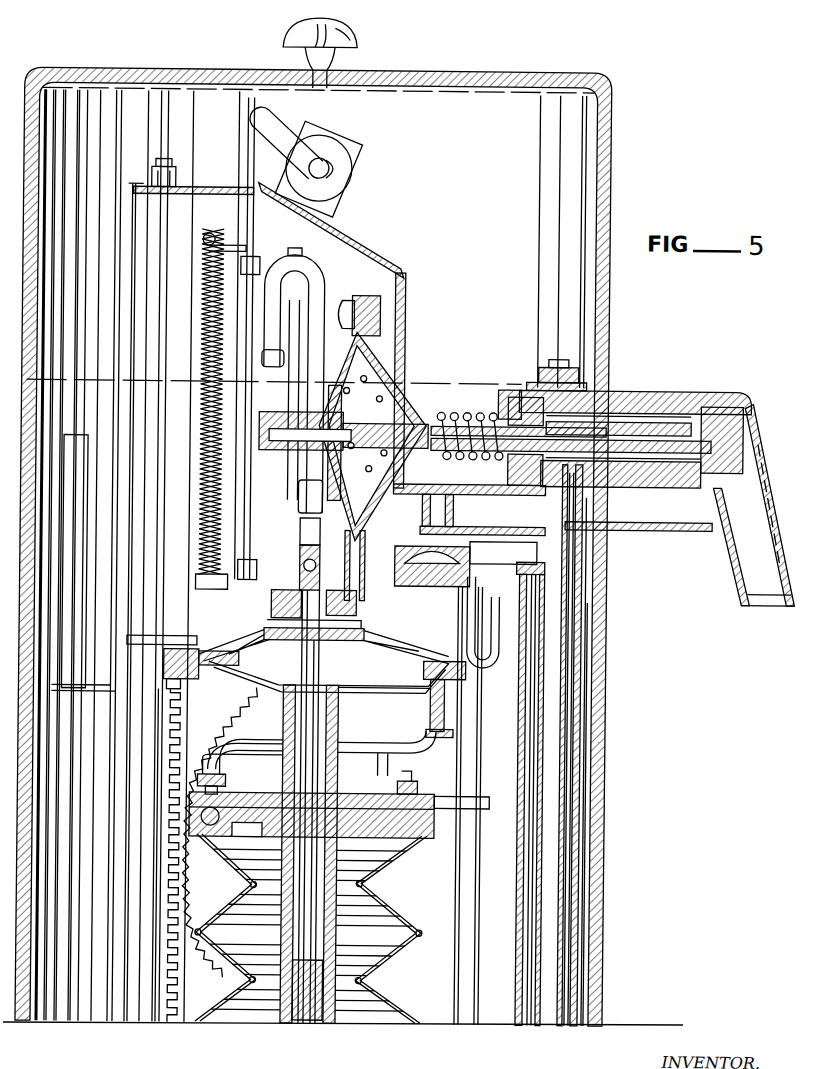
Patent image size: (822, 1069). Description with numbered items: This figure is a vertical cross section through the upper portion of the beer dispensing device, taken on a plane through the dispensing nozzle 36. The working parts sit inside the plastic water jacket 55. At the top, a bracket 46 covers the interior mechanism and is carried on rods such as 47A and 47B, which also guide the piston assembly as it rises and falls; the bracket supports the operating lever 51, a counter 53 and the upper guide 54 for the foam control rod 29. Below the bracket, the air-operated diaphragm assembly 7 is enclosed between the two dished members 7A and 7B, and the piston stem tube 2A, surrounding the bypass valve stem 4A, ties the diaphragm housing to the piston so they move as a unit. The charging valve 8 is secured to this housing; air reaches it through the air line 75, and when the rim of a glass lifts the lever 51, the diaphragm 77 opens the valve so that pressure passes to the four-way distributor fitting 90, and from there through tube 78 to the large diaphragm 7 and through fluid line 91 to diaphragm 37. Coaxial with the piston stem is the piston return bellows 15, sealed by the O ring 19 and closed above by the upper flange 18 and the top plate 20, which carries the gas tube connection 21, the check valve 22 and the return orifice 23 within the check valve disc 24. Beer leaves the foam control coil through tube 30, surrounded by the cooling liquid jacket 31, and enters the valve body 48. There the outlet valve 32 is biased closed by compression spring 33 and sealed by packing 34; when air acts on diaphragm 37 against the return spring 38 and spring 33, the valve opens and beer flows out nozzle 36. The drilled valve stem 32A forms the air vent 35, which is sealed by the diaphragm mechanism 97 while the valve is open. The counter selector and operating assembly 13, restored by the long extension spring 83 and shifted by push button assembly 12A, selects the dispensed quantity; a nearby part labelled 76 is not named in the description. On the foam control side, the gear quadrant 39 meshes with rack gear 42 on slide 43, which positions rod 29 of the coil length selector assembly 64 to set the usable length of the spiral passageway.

The upper guide 54 is at (125, 185).
The rod 47A is at (160, 162).
The bracket 46 is at (205, 188).
The counter 53 is at (330, 150).
The long extension spring 83 is at (206, 234).
The counter selector and operating assembly 13 is at (240, 466).
The fluid line 91 is at (265, 382).
The tube 78 is at (305, 530).
The four-way distributor fitting 90 is at (303, 556).
The diaphragm 37 is at (355, 358).
The diaphragm return spring 38 is at (385, 380).
The diaphragm mechanism 97 is at (440, 410).
The compression spring 33 is at (462, 415).
The packing 34 is at (515, 392).
The diaphragm 77 is at (430, 545).
The valve body 48 is at (640, 386).
The valve stem 32A is at (622, 425).
The air vent 35 is at (742, 426).
The outlet valve 32 is at (729, 388).
The nozzle 36 is at (772, 604).
The operating lever 51 is at (652, 528).
The push button assembly 12A is at (606, 553).
The cooling liquid jacket 31 is at (545, 885).
The tube 30 is at (567, 840).
The rod 47B is at (528, 921).
The water jacket 55 is at (600, 754).
The top plate 20 is at (495, 800).
The air line 75 is at (484, 695).
The charging valve 8 is at (480, 610).
The pin 76 is at (162, 635).
The dished member 7A is at (238, 652).
The diaphragm assembly 7 is at (240, 665).
The piston stem 2A is at (338, 938).
The dished member 7B is at (387, 686).
The gas tube connection 21 is at (232, 768).
The check valve 22 is at (212, 832).
The return orifice 23 is at (240, 845).
The O ring 19 is at (347, 837).
The check valve disc 24 is at (255, 837).
The upper flange 18 is at (404, 782).
The valve stem 4A is at (282, 972).
The piston return bellows 15 is at (430, 930).
The gear quadrant 39 is at (207, 1025).
The rack gear 42 is at (232, 980).
The slide 43 is at (170, 980).
The foam control rod 29 is at (62, 1013).
The coil length selector assembly 64 is at (26, 1012).